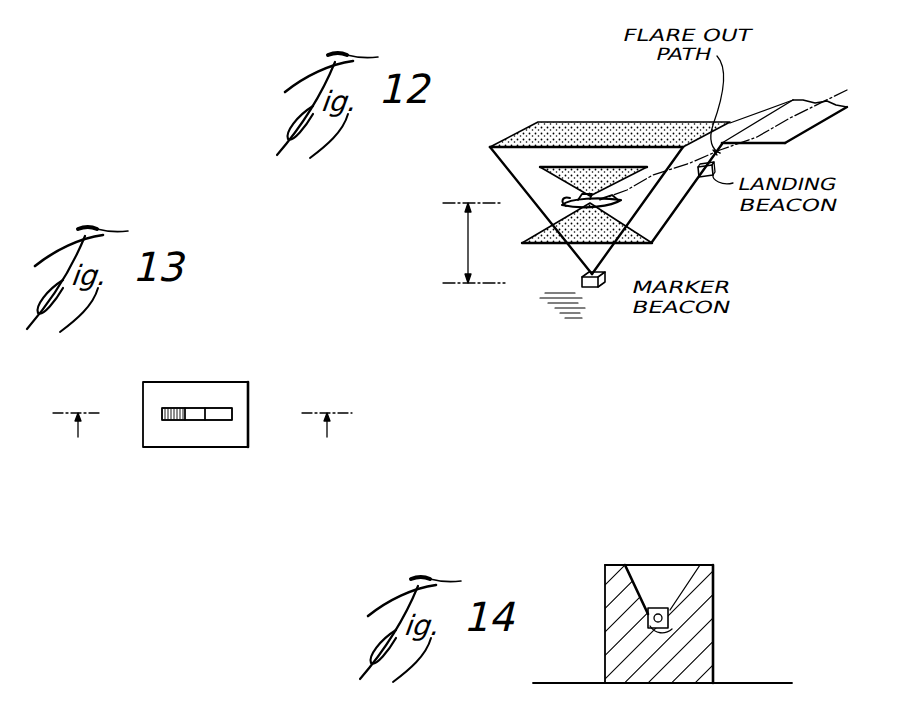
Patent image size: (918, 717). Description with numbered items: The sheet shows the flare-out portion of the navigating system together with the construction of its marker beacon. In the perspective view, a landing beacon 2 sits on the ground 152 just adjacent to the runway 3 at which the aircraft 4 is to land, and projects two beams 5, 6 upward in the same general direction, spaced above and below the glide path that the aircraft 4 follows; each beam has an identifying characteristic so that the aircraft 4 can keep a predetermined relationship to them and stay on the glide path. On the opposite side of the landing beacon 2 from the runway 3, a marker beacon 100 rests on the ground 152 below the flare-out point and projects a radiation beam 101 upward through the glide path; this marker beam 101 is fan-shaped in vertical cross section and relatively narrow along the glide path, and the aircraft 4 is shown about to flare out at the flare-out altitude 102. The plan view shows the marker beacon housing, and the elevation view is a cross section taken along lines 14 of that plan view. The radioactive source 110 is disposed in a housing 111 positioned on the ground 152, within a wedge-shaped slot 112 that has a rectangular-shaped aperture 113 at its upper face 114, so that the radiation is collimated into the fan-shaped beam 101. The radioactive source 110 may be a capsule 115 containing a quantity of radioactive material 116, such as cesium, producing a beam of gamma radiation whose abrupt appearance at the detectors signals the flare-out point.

In FIG. 12, the landing beacon 2 is at (715, 168).
In FIG. 12, the runway 3 is at (775, 116).
In FIG. 12, the aircraft 4 is at (553, 213).
In FIG. 12, the beam 5 is at (563, 177).
In FIG. 12, the beam 6 is at (583, 231).
In FIG. 12, the marker beacon 100 is at (605, 274).
In FIG. 13, the marker beacon 100 is at (210, 398).
In FIG. 12, the radiation beam 101 is at (597, 127).
In FIG. 12, the flare-out altitude 102 is at (466, 243).
In FIG. 12, the ground 152 is at (547, 294).
In FIG. 14, the ground 152 is at (574, 683).
In FIG. 13, the section lines 14 is at (202, 448).
In FIG. 13, the radioactive source 110 is at (193, 411).
In FIG. 14, the radioactive source 110 is at (663, 603).
In FIG. 14, the housing 111 is at (697, 660).
In FIG. 13, the wedge-shaped slot 112 is at (220, 421).
In FIG. 14, the wedge-shaped slot 112 is at (682, 567).
In FIG. 13, the rectangular-shaped aperture 113 is at (177, 421).
In FIG. 13, the upper face 114 is at (243, 393).
In FIG. 14, the upper face 114 is at (613, 565).
In FIG. 14, the capsule 115 is at (662, 632).
In FIG. 14, the radioactive material 116 is at (670, 610).